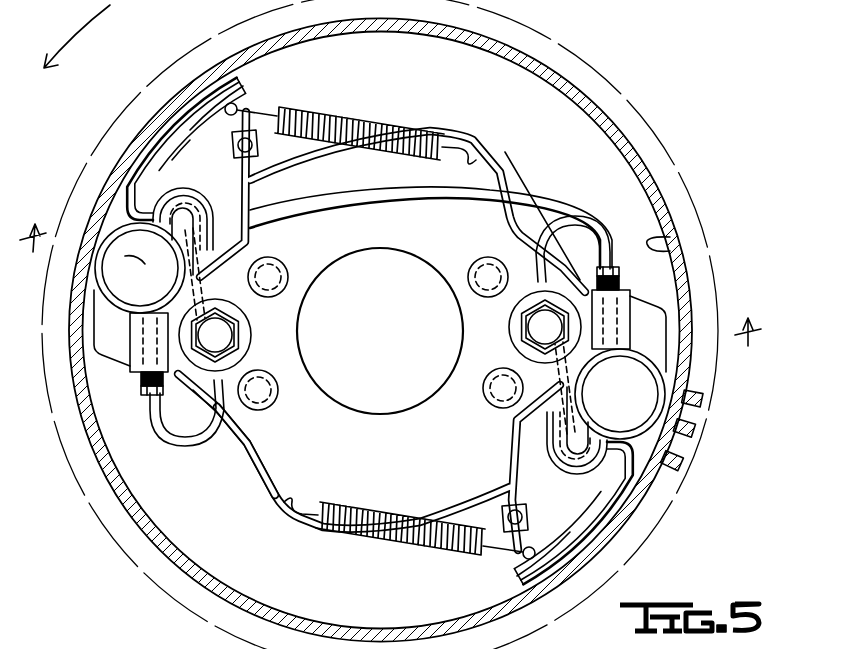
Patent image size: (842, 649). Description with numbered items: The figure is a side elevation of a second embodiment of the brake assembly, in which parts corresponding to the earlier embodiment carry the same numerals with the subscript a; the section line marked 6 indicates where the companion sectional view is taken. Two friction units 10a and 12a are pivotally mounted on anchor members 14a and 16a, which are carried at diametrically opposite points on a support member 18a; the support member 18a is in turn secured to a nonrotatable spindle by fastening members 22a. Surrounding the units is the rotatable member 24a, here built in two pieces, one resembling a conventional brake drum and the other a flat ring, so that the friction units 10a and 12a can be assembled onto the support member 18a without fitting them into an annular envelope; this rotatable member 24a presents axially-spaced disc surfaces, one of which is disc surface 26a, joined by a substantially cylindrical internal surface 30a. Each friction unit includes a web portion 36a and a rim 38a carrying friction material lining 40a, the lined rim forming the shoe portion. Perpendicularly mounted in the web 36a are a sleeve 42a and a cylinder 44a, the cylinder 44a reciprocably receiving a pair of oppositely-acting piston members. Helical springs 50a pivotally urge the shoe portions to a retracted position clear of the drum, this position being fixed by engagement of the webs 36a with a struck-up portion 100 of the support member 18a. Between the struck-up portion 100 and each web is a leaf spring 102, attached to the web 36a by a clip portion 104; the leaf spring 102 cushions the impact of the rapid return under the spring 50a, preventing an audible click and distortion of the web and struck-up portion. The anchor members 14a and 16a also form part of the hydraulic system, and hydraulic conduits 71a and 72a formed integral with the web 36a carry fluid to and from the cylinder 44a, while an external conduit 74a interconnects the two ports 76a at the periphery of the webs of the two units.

The section line 6- 6 is at (390, 272).
The friction unit 10a is at (172, 149).
The friction unit 12a is at (578, 548).
The anchor member 14a is at (243, 337).
The anchor member 16a is at (507, 352).
The support member 18a is at (273, 466).
The fastening member 22a is at (378, 264).
The rotatable member 24a is at (666, 216).
The disc surface 26a is at (222, 557).
The cylindrical internal surface 30a is at (670, 244).
The web portion 36a is at (190, 135).
The rim 38a is at (224, 92).
The friction material lining 40a is at (236, 78).
The sleeve 42a is at (507, 337).
The cylinder 44a is at (96, 270).
The helical spring 50a is at (383, 157).
The hydraulic conduit 71a is at (385, 348).
The hydraulic conduit 72a is at (183, 203).
The external conduit 74a is at (377, 195).
The port 76a is at (392, 351).
The struck-up portion 100 is at (255, 197).
The leaf spring 102 is at (262, 226).
The clip portion 104 is at (243, 160).